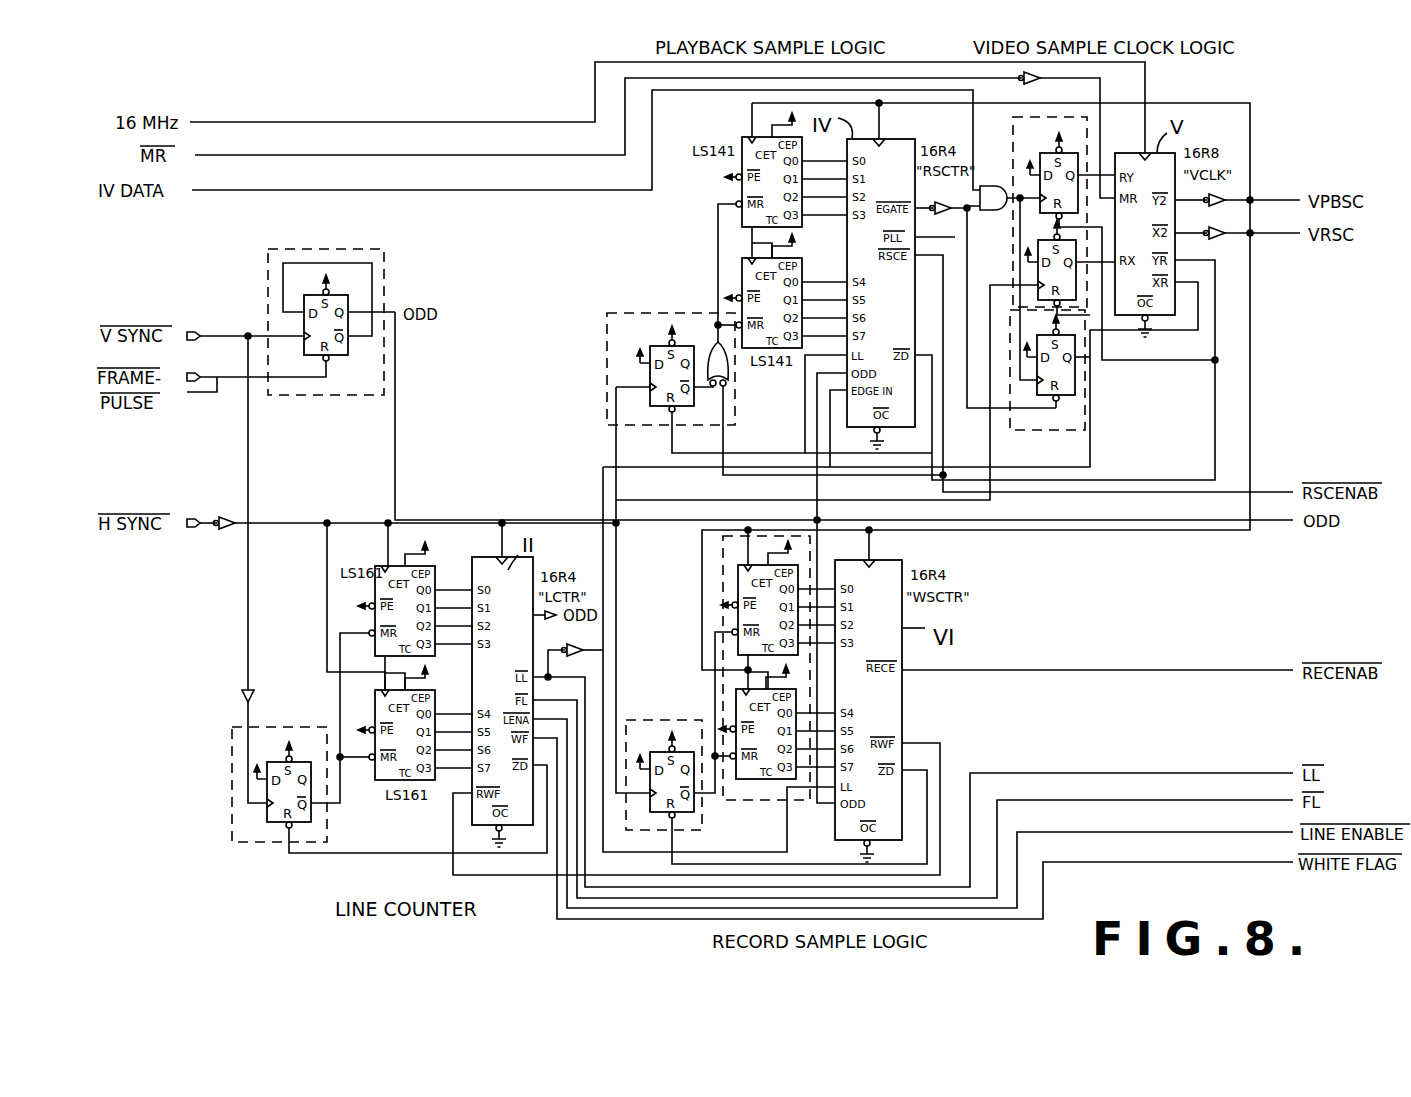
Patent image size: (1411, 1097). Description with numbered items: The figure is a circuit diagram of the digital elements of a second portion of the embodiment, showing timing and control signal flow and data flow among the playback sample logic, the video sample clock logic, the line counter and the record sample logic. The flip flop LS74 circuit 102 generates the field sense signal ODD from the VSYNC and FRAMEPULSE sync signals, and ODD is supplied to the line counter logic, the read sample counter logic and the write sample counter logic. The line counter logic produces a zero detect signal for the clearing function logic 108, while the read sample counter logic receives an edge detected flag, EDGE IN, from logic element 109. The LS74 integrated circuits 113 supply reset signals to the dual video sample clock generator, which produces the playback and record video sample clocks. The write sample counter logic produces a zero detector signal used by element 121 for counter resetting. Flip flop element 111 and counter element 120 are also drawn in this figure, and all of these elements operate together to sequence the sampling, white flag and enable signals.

The flip flop LS74 circuit 102 is at (385, 258).
The clearing function logic 108 is at (272, 845).
The logic element 109 is at (1046, 400).
The playback sample logic flip-flop 111 is at (647, 313).
The LS74 integrated circuits 113 is at (1012, 150).
The record sample counter 120 is at (723, 567).
The element 121 is at (668, 720).